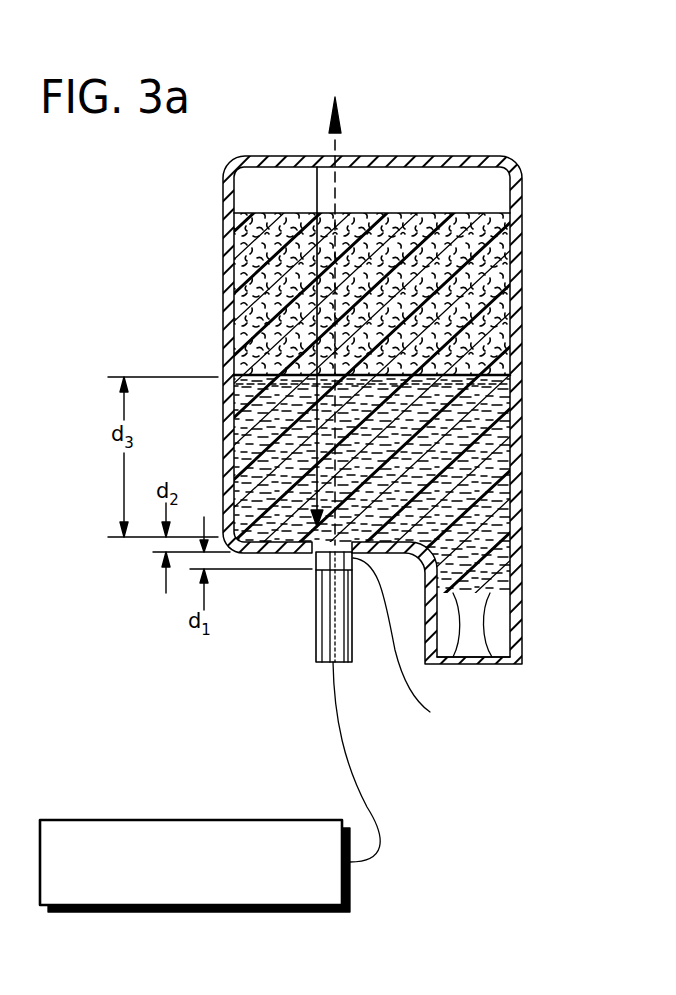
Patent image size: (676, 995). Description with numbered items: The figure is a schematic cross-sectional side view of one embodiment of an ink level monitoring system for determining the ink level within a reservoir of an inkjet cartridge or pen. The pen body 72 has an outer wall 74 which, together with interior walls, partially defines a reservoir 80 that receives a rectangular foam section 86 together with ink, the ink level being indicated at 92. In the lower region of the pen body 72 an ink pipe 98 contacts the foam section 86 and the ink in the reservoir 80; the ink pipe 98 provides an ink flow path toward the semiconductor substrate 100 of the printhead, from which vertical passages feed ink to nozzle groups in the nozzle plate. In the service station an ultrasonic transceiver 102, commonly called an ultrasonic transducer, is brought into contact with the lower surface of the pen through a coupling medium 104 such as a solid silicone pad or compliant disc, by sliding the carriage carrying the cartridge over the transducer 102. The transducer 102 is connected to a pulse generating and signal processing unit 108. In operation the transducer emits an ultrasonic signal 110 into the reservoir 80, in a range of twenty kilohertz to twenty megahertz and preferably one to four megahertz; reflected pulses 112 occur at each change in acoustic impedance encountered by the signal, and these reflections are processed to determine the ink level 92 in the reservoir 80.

The pen body 72 is at (541, 333).
The outer wall 74 is at (521, 387).
The reservoir 80 is at (400, 312).
The foam section 86 is at (435, 212).
The ink level 92 is at (398, 368).
The ink pipe 98 is at (475, 620).
The semiconductor substrate 100 is at (478, 665).
The ultrasonic transceiver 102 is at (325, 625).
The coupling medium 104 is at (399, 710).
The pulse generating and signal processing unit 108 is at (178, 820).
The ultrasonic signal 110 is at (340, 224).
The reflected pulses 112 is at (313, 415).